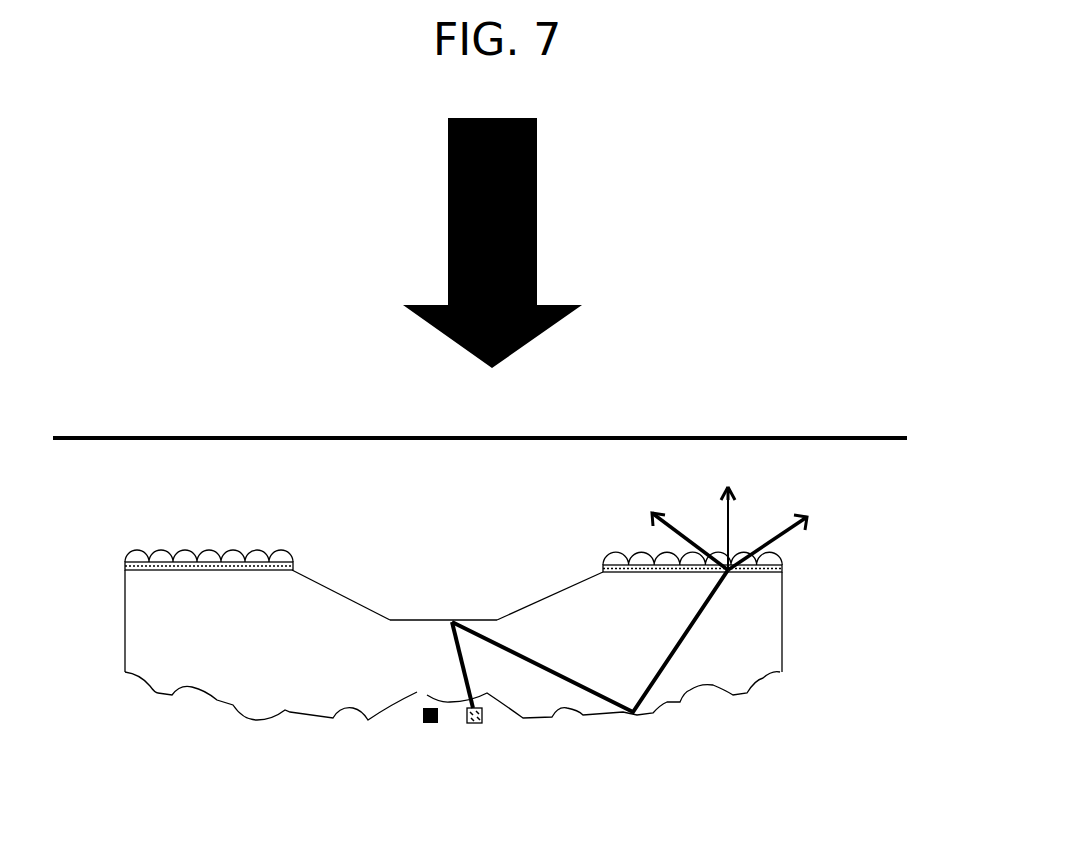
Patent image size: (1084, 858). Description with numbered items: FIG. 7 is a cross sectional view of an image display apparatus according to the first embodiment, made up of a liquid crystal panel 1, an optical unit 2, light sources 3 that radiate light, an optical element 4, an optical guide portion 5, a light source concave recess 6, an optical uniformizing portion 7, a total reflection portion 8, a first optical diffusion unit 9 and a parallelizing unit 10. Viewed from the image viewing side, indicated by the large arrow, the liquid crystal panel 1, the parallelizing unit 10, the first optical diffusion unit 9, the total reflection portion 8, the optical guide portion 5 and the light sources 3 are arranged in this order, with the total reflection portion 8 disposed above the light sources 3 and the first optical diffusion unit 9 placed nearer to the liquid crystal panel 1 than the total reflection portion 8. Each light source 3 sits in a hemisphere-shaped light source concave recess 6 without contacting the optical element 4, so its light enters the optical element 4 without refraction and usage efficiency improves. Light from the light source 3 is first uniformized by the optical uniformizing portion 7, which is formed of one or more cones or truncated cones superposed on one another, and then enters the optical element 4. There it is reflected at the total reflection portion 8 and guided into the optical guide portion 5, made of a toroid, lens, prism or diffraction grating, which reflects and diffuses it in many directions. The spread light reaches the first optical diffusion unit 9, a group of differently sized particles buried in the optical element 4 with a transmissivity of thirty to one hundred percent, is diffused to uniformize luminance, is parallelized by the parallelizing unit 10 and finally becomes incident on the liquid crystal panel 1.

The liquid crystal panel 1 is at (498, 441).
The optical unit 2 is at (782, 672).
The light source 3 is at (422, 728).
The optical element 4 is at (757, 640).
The optical guide portion 5 is at (210, 702).
The light source concave recess 6 is at (492, 708).
The optical uniformizing portion 7 is at (420, 695).
The total reflection portion 8 is at (417, 627).
The first optical diffusion unit 9 is at (783, 565).
The parallelizing unit 10 is at (263, 558).